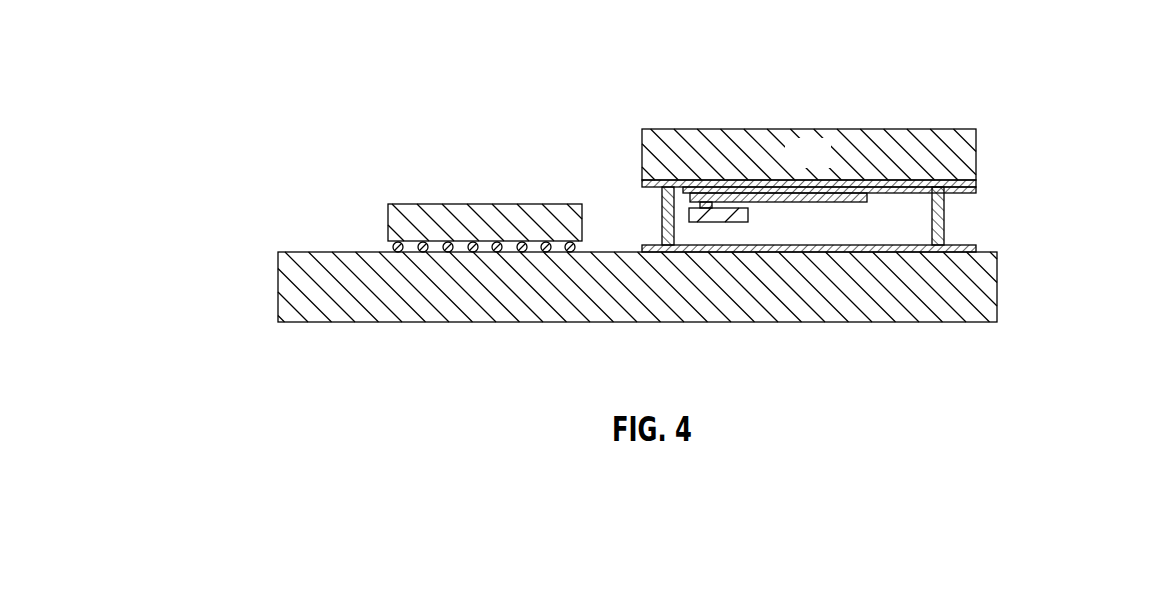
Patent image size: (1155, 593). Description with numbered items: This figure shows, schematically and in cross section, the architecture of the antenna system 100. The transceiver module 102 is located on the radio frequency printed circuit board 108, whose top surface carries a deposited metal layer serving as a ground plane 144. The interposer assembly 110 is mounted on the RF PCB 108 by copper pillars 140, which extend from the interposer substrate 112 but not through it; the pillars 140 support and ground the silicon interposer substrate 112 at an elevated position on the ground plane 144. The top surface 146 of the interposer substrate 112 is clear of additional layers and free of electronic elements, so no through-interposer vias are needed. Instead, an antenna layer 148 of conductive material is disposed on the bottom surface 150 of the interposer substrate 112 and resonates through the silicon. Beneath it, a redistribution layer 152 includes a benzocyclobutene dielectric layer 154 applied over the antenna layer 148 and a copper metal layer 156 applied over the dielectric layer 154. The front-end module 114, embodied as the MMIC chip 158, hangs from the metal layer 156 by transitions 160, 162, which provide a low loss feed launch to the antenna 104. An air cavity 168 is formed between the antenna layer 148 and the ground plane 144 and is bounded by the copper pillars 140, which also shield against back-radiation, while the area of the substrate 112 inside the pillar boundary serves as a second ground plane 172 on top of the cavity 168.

The antenna system 100 is at (752, 43).
The transceiver module 102 is at (423, 203).
The antenna 104 is at (913, 195).
The radio frequency printed circuit board 108 is at (590, 315).
The interposer assembly 110 is at (640, 152).
The interposer substrate 112 is at (788, 166).
The front-end module 114 is at (686, 216).
The copper pillars 140 is at (661, 236).
The ground plane 144 is at (977, 251).
The top surface 146 is at (947, 128).
The antenna layer 148 is at (977, 183).
The bottom surface 150 is at (893, 187).
The redistribution layer 152 is at (876, 205).
The dielectric layer 154 is at (977, 190).
The metal layer 156 is at (828, 202).
The MMIC chip 158 is at (738, 215).
The transition 160 is at (702, 196).
The transition 162 is at (732, 212).
The air cavity 168 is at (782, 236).
The second ground plane 172 is at (772, 238).